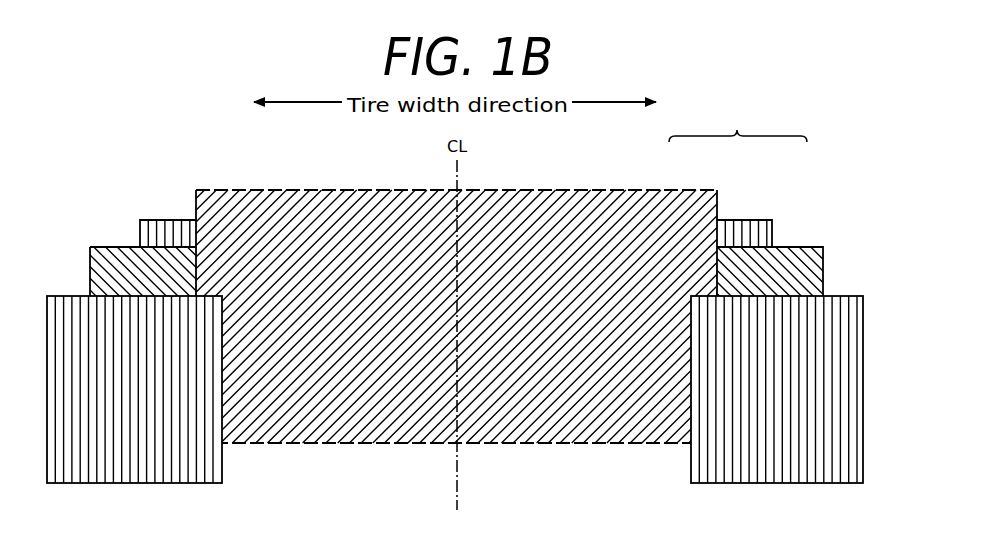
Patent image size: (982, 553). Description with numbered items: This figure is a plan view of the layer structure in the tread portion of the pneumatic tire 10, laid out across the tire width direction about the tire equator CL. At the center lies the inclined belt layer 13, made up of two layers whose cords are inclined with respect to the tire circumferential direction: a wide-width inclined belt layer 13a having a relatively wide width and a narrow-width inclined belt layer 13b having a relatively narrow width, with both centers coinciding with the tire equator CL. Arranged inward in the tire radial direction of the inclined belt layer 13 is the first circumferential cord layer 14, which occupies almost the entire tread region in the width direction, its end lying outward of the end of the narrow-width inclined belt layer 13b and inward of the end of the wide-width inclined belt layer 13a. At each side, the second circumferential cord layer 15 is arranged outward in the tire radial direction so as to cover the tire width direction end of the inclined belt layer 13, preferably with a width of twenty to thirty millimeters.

The pneumatic tire 10 is at (806, 108).
The inclined belt layer 13 is at (738, 121).
The wide-width inclined belt layer 13a is at (788, 255).
The narrow-width inclined belt layer 13b is at (688, 205).
The first circumferential cord layer 14 is at (168, 223).
The second circumferential cord layer 15 is at (109, 470).